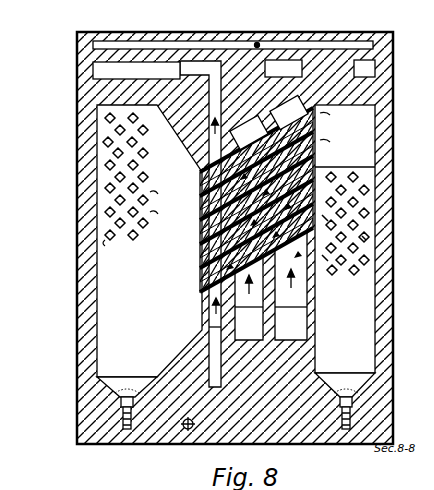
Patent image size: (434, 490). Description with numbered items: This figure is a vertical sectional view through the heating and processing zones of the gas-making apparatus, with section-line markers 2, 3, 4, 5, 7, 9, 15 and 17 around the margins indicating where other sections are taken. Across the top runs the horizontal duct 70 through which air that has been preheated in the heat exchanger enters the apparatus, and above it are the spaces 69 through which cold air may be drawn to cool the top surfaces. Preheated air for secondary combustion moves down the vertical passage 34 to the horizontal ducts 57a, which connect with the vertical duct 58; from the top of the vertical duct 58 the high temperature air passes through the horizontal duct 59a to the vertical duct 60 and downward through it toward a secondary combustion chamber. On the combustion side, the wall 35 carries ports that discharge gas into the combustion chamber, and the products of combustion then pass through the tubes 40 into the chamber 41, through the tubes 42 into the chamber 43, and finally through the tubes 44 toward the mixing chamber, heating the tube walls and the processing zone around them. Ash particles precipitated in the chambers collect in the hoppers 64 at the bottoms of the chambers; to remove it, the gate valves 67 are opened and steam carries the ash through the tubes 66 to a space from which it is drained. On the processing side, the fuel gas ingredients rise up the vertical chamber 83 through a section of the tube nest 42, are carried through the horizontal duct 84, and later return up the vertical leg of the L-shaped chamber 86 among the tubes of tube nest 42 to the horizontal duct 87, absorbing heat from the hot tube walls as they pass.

The horizontal duct 59a is at (175, 70).
The spaces 69 is at (256, 48).
The horizontal duct 70 is at (283, 69).
The vertical duct 60 is at (365, 69).
The vertical duct 58 is at (228, 98).
The horizontal duct 84 is at (289, 112).
The horizontal duct 87 is at (249, 132).
The tubes 40 is at (361, 160).
The tubes 44 is at (151, 161).
The tubes 42 is at (256, 200).
The chamber 43 is at (149, 241).
The chamber 41 is at (345, 239).
The wall 35 is at (209, 318).
The L-shaped chamber 86 is at (249, 298).
The vertical chamber 83 is at (291, 286).
The wall 34 is at (309, 328).
The horizontal duct 57a is at (223, 375).
The hopper 64 is at (236, 401).
The gate valve 67 is at (120, 404).
The tube 66 is at (134, 427).
The section line 9- 9 is at (113, 15).
The section line 17- 17 is at (219, 15).
The section line 15- 15 is at (272, 15).
The section line 7- 7 is at (327, 15).
The section line 2- 2 is at (65, 66).
The section line 3- 3 is at (65, 105).
The section line 4- 4 is at (68, 343).
The section line 5- 5 is at (122, 415).